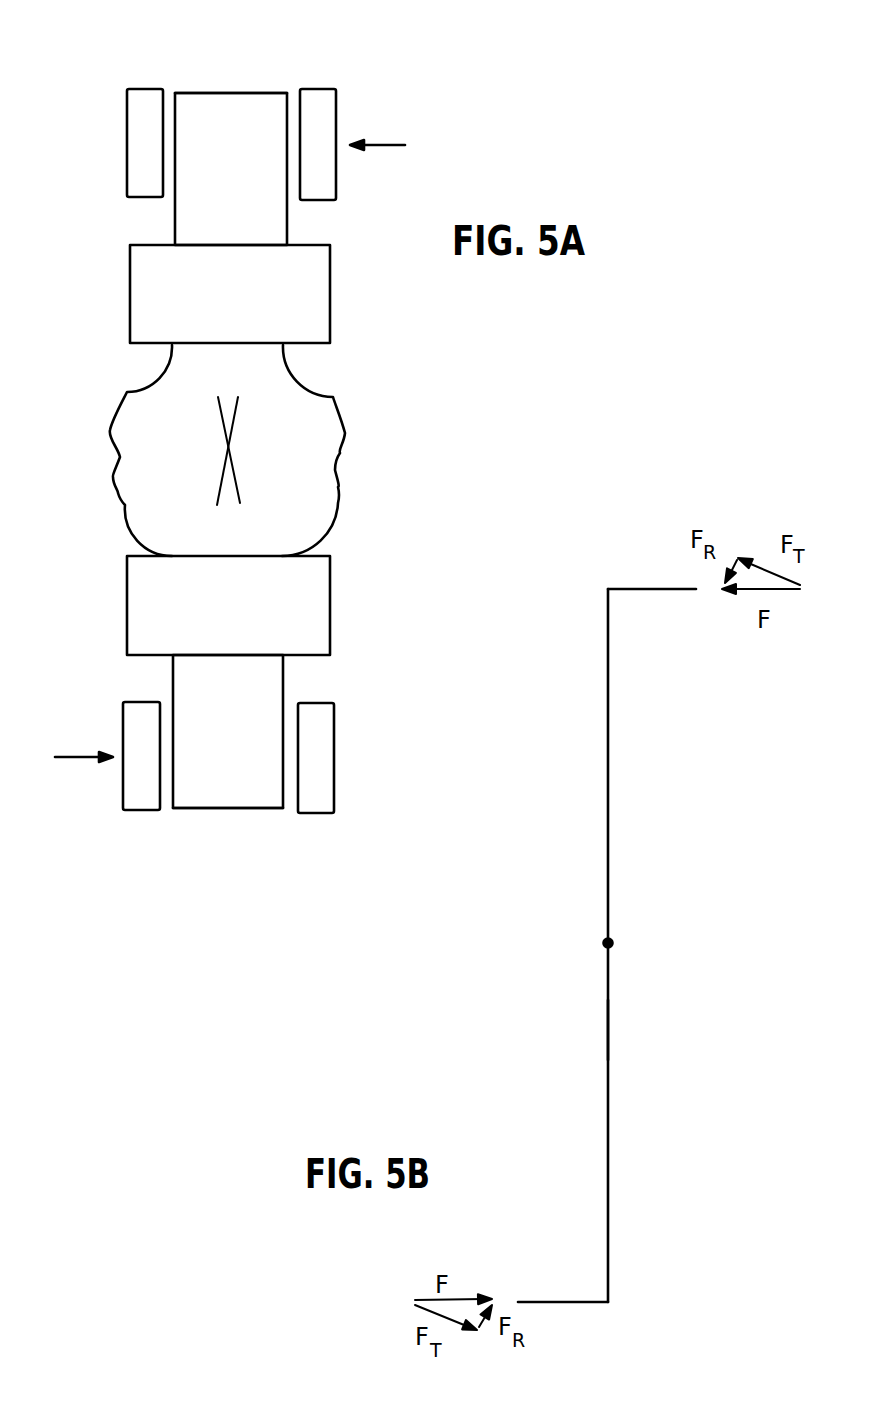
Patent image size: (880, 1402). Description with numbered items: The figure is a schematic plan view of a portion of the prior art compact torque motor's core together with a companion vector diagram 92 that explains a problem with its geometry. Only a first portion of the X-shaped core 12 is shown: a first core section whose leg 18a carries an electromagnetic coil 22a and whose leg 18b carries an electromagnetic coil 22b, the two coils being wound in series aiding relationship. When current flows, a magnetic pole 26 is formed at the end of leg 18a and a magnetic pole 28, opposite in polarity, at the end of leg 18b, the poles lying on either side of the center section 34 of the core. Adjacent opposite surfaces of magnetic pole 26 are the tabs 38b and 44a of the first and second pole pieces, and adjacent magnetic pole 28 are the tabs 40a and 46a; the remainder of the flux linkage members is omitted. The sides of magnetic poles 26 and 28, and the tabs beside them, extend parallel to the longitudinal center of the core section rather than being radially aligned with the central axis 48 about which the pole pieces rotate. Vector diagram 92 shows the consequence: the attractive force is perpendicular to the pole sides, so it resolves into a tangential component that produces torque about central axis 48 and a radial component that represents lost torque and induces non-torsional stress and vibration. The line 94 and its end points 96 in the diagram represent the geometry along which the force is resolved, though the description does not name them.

In FIG. 5A, the X-shaped core 12 is at (152, 855).
In FIG. 5A, the leg 18a is at (237, 90).
In FIG. 5A, the leg 18b is at (212, 810).
In FIG. 5A, the electromagnetic coil 22a is at (330, 290).
In FIG. 5A, the electromagnetic coil 22b is at (330, 630).
In FIG. 5A, the magnetic pole 26 is at (236, 178).
In FIG. 5A, the magnetic pole 28 is at (242, 746).
In FIG. 5A, the center section 34 is at (325, 458).
In FIG. 5A, the tab 38b is at (135, 132).
In FIG. 5A, the tab 40a is at (325, 780).
In FIG. 5A, the tab 44a is at (327, 103).
In FIG. 5A, the tab 46a is at (143, 790).
In FIG. 5A, the central axis 48 is at (229, 447).
In FIG. 5B, the central axis 48 is at (608, 943).
In FIG. 5B, the vector diagram 92 is at (578, 1023).
In FIG. 5B, the lever line 94 is at (608, 745).
In FIG. 5B, the lever end 96 is at (650, 589).